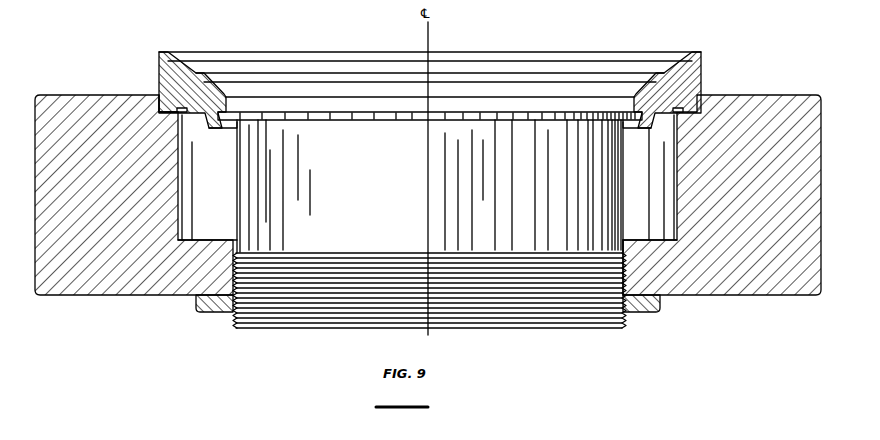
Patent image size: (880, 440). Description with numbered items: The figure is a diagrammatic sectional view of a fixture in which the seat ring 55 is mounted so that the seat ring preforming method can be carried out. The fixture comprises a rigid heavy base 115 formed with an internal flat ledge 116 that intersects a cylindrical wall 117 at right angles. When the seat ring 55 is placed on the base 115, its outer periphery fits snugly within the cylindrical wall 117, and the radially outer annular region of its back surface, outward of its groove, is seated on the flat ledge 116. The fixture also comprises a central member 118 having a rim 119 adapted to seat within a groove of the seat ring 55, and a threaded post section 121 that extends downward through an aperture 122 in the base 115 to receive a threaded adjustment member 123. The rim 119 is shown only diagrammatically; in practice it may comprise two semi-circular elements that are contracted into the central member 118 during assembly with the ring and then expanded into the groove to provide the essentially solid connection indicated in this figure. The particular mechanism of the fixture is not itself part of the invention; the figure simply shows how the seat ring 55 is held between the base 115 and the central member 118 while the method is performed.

The base 115 is at (83, 100).
The seat ring 55 is at (158, 69).
The cylindrical wall 117 is at (157, 90).
The flat ledge 116 is at (162, 116).
The rim 119 is at (283, 116).
The central member 118 is at (352, 171).
The threaded post section 121 is at (628, 320).
The aperture 122 is at (627, 268).
The threaded adjustment member 123 is at (667, 304).